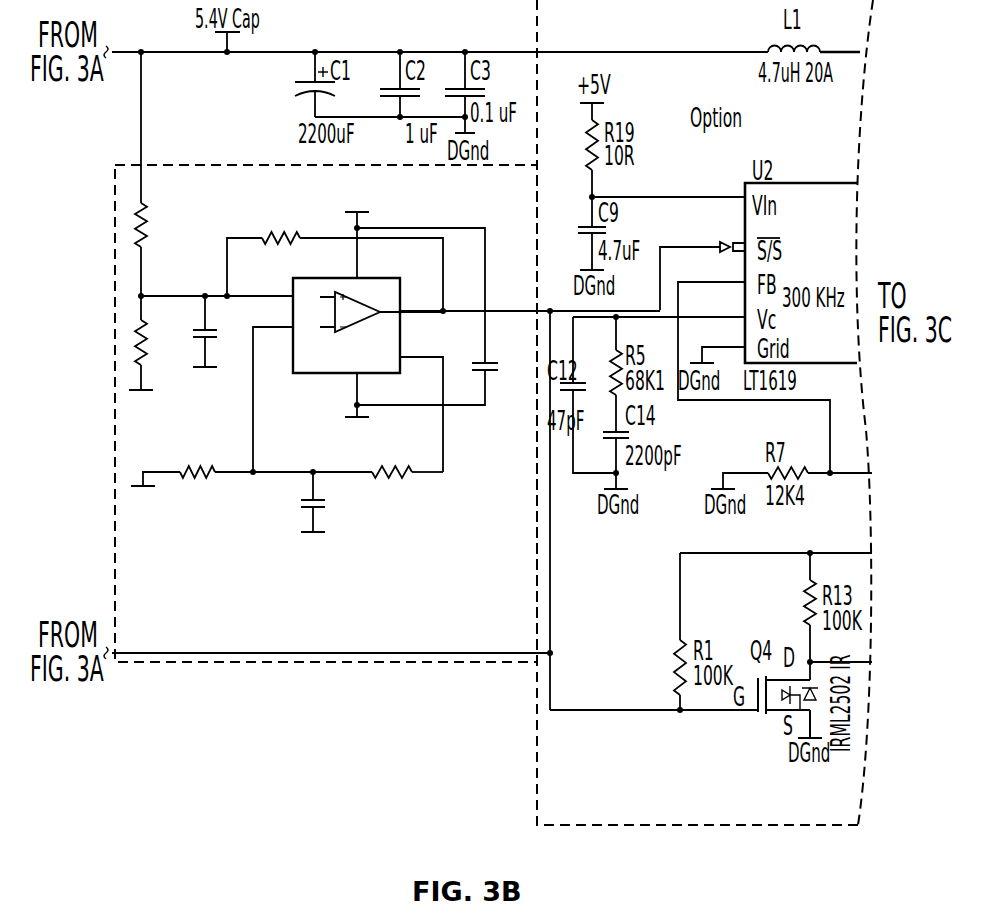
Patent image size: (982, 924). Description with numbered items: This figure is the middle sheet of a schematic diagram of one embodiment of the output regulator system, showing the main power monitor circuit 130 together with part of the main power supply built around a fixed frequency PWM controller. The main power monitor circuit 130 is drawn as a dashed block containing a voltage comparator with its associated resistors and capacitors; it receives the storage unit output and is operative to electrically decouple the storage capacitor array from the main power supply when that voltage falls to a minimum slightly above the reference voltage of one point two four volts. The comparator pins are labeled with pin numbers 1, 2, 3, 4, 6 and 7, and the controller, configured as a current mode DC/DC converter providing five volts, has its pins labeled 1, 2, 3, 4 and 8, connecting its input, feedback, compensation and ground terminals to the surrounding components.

The main power monitor circuit 130 is at (113, 388).
The pin 1 is at (572, 345).
The pin 2 is at (541, 363).
The pin 3 is at (443, 292).
The pin 4 is at (332, 386).
The pin 6 is at (421, 296).
The pin 7 is at (353, 263).
The pin 8 is at (668, 181).